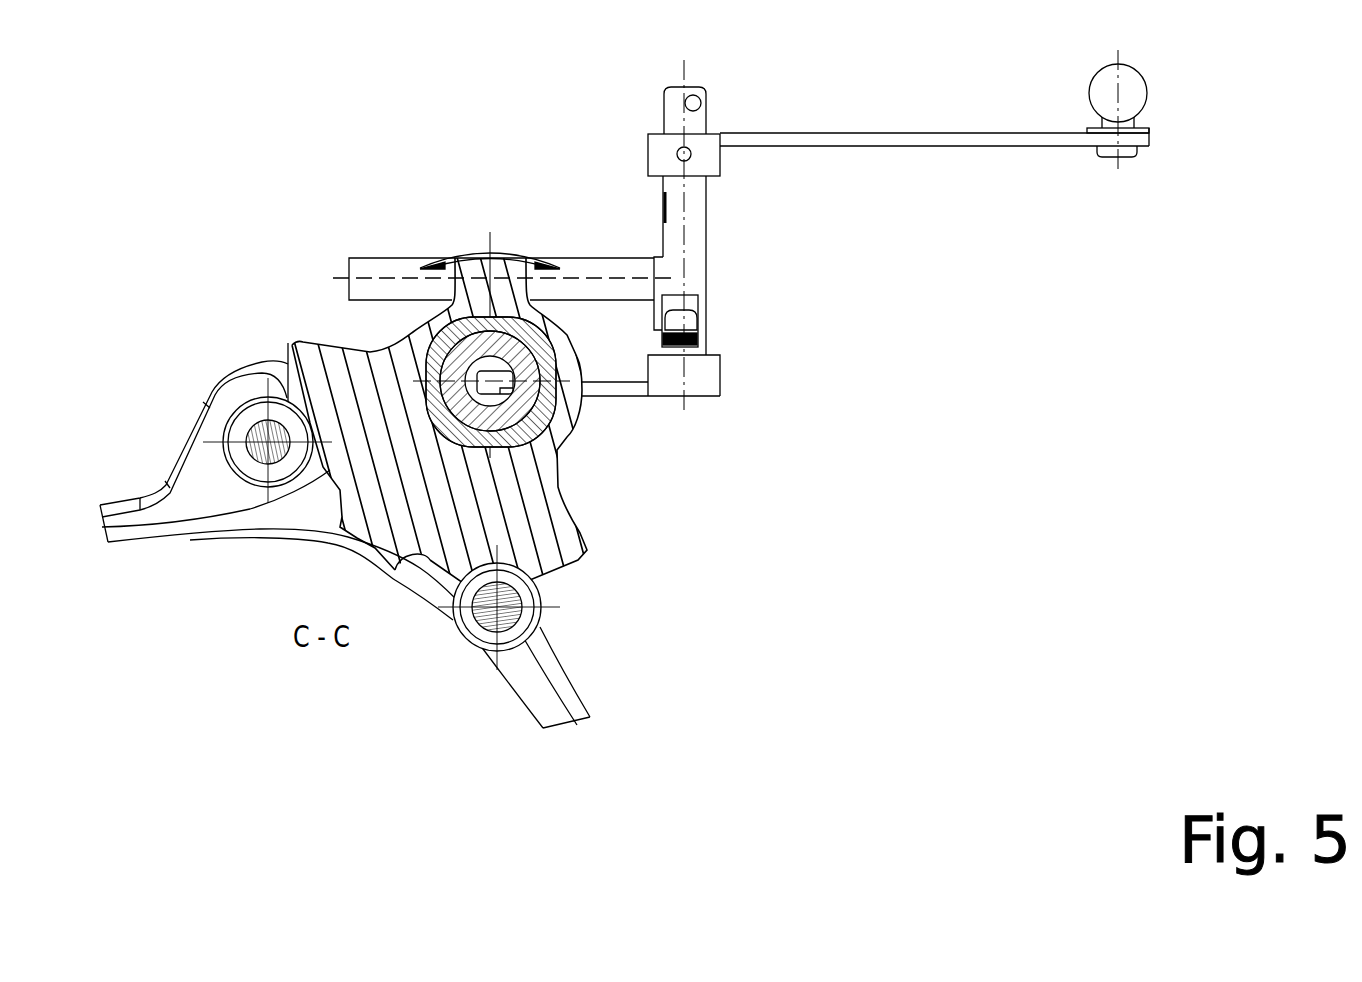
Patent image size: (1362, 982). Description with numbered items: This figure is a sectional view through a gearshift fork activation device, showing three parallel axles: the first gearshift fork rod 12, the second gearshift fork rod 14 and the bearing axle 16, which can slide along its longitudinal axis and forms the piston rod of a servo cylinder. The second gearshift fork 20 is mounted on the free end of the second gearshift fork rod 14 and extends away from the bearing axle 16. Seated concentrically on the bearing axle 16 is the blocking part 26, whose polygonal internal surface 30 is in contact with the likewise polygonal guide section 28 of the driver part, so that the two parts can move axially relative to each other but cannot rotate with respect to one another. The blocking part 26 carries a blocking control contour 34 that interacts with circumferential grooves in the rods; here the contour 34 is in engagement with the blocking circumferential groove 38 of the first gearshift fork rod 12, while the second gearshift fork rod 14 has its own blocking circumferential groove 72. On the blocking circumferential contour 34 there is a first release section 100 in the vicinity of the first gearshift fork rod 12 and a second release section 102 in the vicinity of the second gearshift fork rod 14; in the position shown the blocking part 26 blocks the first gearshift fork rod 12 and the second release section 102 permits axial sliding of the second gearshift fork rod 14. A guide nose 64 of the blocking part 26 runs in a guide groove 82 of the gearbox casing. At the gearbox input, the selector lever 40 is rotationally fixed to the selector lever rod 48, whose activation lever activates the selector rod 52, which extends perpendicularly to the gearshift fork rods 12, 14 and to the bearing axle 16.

The first gearshift fork rod 12 is at (540, 627).
The second gearshift fork rod 14 is at (247, 397).
The bearing axle 16 is at (552, 360).
The second gearshift fork 20 is at (187, 430).
The blocking part 26 is at (568, 513).
The guide section 28 is at (557, 440).
The internal surface 30 is at (490, 381).
The blocking control contour 34 is at (360, 538).
The blocking circumferential groove 38 is at (523, 597).
The selector lever 40 is at (933, 132).
The selector lever rod 48 is at (710, 193).
The selector rod 52 is at (620, 256).
The guide nose 64 is at (472, 266).
The blocking circumferential groove 72 is at (247, 450).
The guide groove 82 is at (432, 267).
The first release section 100 is at (430, 560).
The second release section 102 is at (215, 517).